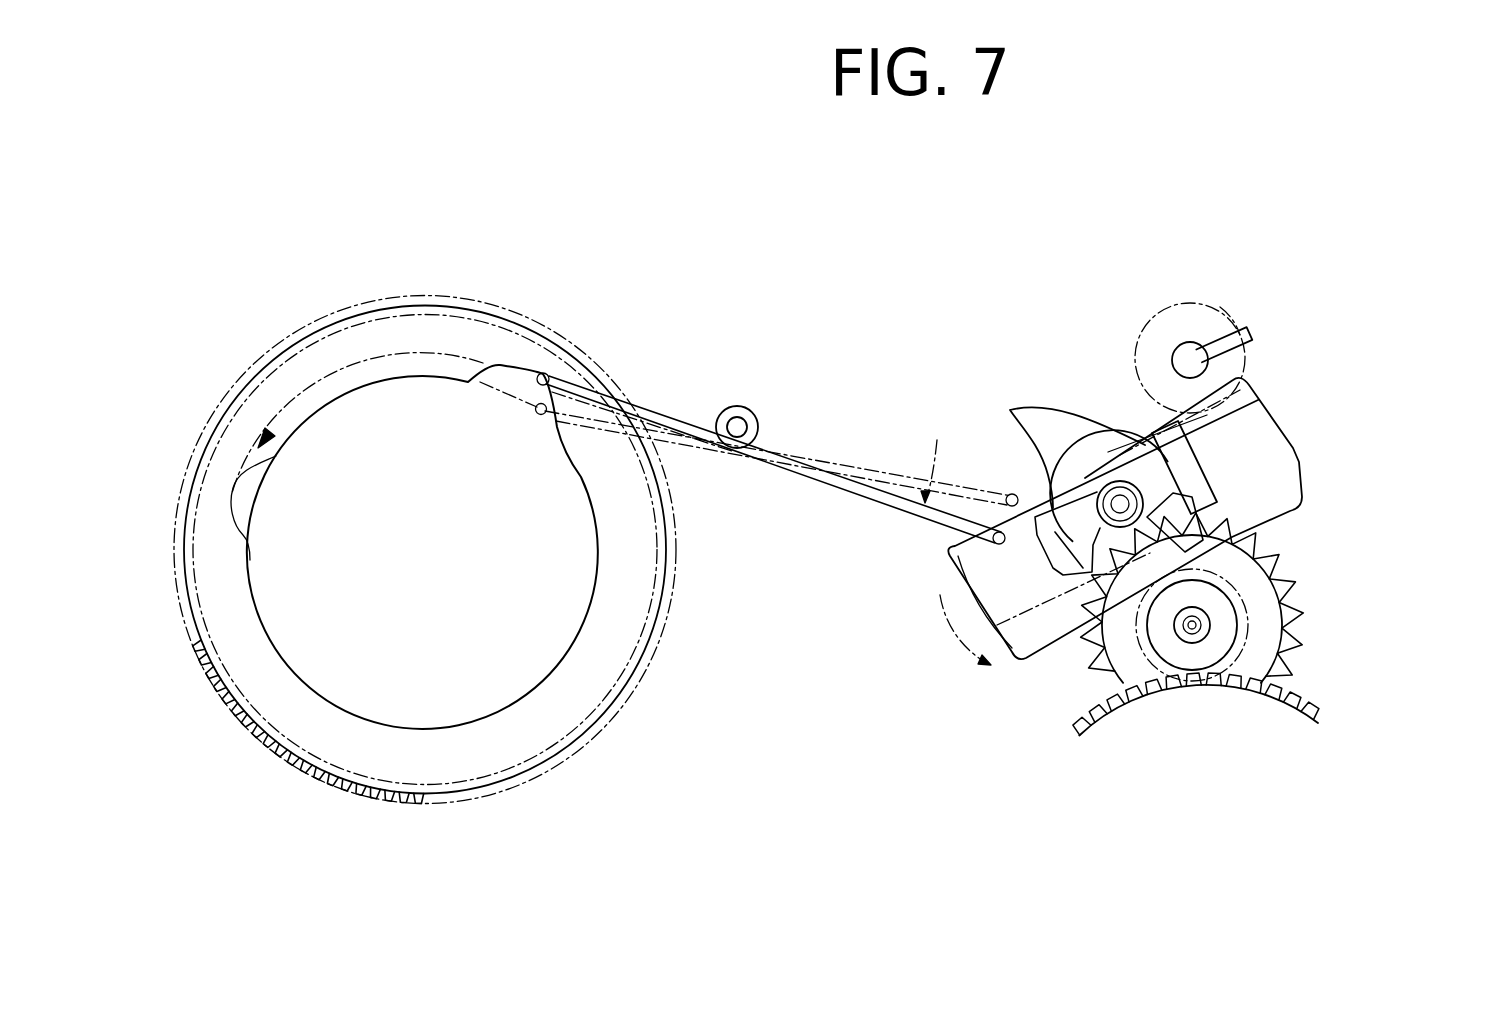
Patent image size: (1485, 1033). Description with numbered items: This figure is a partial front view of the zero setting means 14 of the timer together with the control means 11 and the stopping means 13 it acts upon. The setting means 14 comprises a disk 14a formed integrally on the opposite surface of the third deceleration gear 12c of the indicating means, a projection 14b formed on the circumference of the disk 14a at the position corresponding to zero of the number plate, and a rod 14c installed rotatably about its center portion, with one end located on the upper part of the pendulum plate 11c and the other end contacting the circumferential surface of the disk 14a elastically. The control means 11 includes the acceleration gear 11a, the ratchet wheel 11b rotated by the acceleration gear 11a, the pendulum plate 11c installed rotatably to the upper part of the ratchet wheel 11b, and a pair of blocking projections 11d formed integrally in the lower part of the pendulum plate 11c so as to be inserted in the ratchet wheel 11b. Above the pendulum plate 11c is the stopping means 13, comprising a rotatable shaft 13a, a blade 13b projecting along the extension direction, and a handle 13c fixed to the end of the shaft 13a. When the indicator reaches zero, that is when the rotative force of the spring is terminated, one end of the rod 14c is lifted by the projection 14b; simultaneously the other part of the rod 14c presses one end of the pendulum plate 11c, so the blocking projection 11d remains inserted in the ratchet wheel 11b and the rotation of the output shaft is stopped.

The control means 11 is at (1202, 544).
The acceleration gear 11a is at (1307, 702).
The ratchet wheel 11b is at (1300, 603).
The pendulum plate 11c is at (1260, 425).
The blocking projections 11d is at (1010, 410).
The third deceleration gear 12c is at (517, 744).
The stopping means 13 is at (1198, 310).
The shaft 13a is at (1188, 350).
The blade 13b is at (1252, 337).
The handle 13c is at (1220, 307).
The setting means 14 is at (761, 383).
The disk 14a is at (597, 520).
The projection 14b is at (505, 367).
The rod 14c is at (657, 405).